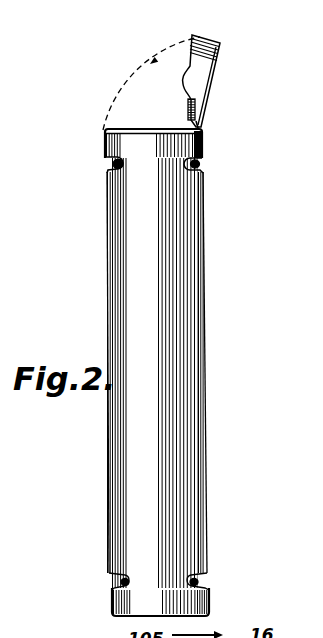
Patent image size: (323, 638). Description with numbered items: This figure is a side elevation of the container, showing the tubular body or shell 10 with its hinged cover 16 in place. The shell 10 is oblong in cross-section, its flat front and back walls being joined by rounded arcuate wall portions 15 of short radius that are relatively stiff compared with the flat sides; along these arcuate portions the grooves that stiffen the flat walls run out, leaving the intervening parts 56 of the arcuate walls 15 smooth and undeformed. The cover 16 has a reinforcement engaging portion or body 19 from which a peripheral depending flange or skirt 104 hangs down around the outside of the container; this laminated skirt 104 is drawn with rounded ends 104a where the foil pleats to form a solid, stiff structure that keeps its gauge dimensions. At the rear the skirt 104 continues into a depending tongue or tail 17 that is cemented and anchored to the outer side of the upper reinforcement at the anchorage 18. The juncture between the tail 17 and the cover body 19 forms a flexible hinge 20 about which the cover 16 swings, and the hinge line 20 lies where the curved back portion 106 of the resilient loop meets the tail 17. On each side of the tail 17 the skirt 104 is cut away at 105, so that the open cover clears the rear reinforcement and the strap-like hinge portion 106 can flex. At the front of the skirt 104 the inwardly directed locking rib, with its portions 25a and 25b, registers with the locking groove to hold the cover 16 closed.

The tubular body or shell 10 is at (178, 443).
The arcuate wall portions 15 is at (178, 343).
The cover 16 is at (209, 72).
The tongue or tail 17 is at (208, 150).
The anchorage 18 is at (205, 164).
The reinforcement engaging portion or body of the cover 19 is at (212, 88).
The flexible hinge 20 is at (204, 134).
The retaining ring 25a is at (112, 166).
The groove 25b is at (108, 173).
The intervening parts of the arcuate walls 56 is at (155, 167).
The peripheral depending flange or skirt 104 is at (200, 50).
The rounded ends of the flange 104a is at (189, 68).
The cut-away portions of the skirt 105 is at (200, 104).
The back portion of the loop (hinge portion) 106 is at (203, 127).